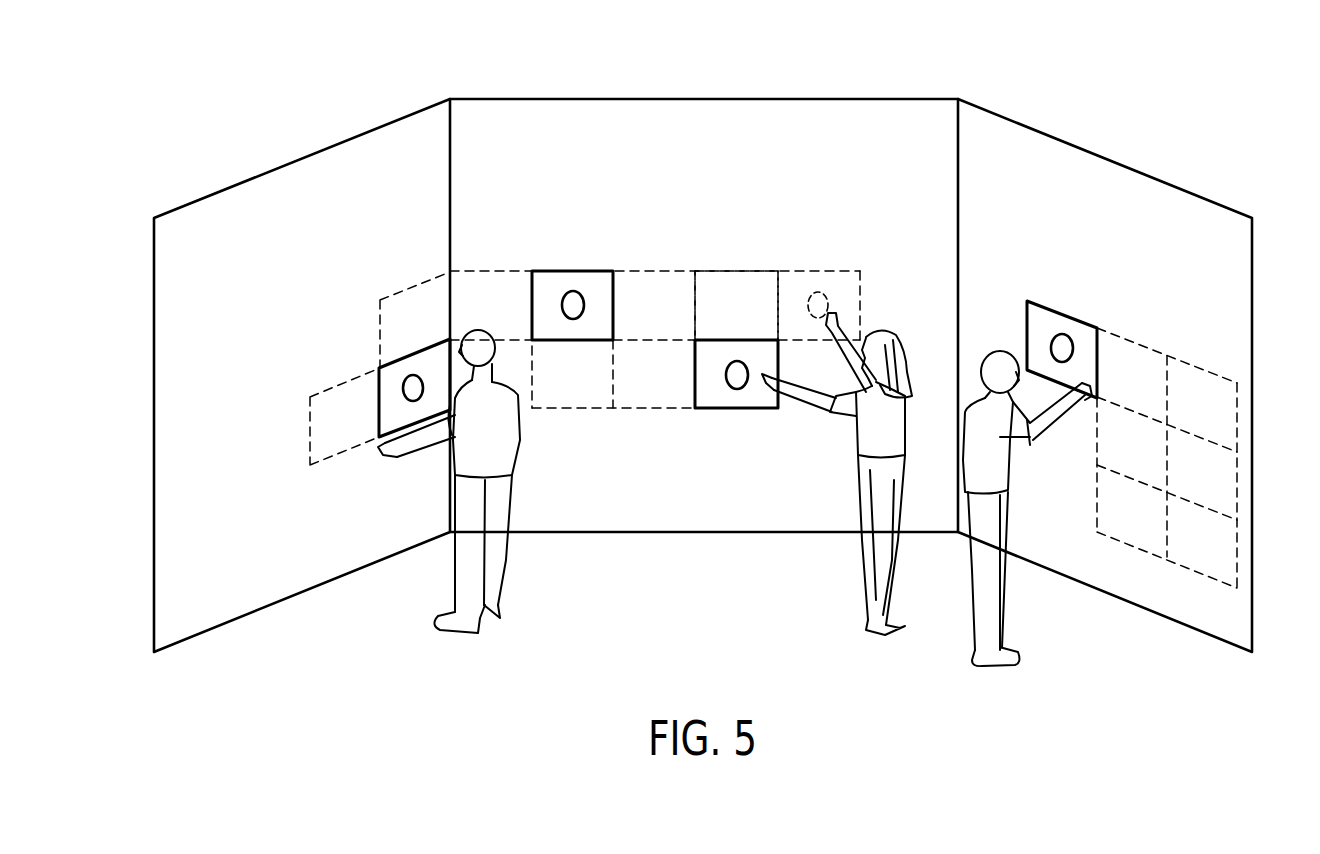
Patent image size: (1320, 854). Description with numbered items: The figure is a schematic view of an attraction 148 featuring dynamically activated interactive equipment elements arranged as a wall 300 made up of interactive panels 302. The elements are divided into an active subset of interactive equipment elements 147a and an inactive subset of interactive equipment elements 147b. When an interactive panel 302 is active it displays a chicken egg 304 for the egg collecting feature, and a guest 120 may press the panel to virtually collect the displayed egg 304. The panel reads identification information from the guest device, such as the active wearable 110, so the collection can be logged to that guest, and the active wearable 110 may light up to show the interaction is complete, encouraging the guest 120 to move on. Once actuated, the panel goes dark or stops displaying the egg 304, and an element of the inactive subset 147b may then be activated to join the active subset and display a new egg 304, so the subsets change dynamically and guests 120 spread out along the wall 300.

The attraction 148 is at (323, 90).
The wall 300 is at (878, 130).
The active subset of interactive equipment elements 147a is at (377, 405).
The inactive subset of interactive equipment elements 147b is at (682, 312).
The interactive panel 302 is at (1203, 372).
The chicken egg 304 is at (748, 386).
The active wearable 110 is at (780, 387).
The guest 120 is at (457, 563).